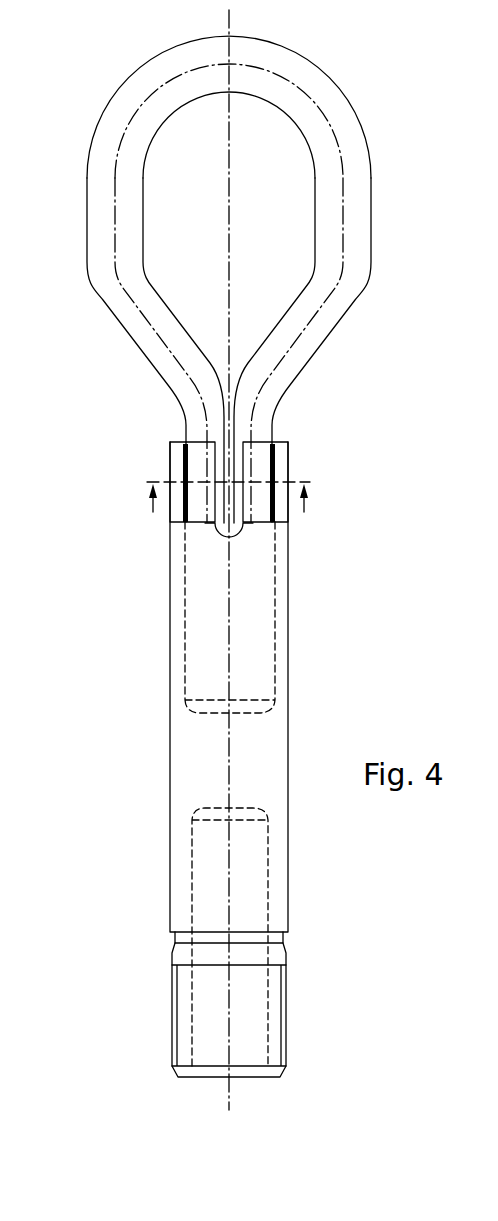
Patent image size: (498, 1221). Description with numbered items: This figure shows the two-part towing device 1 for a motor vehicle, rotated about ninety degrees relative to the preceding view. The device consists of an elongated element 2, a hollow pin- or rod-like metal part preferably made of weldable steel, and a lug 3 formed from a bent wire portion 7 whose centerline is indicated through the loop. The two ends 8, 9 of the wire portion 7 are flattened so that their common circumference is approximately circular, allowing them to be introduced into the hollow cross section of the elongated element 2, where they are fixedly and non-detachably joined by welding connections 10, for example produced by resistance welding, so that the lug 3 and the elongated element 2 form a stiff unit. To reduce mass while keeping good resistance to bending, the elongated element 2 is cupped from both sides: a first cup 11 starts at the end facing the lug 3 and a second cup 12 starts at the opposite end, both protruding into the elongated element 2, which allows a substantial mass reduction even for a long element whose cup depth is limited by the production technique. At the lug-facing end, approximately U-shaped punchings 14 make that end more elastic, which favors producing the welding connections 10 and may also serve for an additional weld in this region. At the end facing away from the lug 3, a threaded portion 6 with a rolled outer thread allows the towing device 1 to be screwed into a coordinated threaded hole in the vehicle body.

The towing device 1 is at (326, 612).
The elongated element 2 is at (288, 670).
The lug 3 is at (381, 225).
The threaded portion 6 is at (283, 1037).
The wire portion 7 is at (358, 202).
The end of the wire portion 8 is at (195, 422).
The end of the wire portion 9 is at (263, 432).
The welding connections 10 is at (277, 463).
The first cup 11 is at (238, 602).
The second cup 12 is at (238, 1015).
The punchings 14 is at (220, 533).